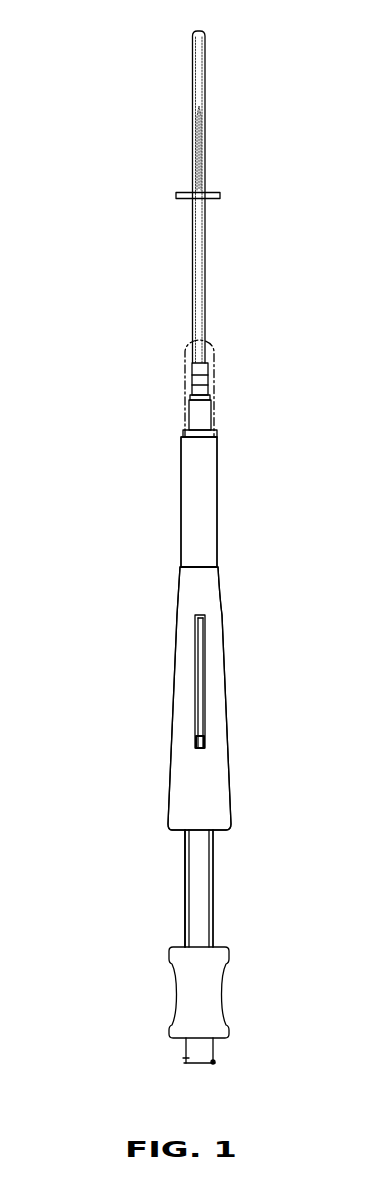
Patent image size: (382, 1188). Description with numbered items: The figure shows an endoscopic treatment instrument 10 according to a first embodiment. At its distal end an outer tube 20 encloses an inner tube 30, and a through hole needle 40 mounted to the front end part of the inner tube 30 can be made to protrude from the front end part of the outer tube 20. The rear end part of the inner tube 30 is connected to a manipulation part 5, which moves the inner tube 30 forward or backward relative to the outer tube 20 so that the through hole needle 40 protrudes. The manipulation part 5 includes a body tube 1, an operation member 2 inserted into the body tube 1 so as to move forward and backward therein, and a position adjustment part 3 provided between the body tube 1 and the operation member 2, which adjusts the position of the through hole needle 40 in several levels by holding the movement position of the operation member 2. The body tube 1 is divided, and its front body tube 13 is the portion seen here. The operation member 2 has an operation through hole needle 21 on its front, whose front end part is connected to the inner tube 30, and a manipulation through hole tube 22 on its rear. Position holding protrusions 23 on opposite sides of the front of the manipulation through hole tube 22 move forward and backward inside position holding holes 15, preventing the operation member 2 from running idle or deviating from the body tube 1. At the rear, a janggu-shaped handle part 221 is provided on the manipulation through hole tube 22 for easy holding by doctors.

The endoscopic treatment instrument 10 is at (301, 593).
The body tube 1 is at (176, 682).
The operation member 2 is at (174, 907).
The position adjustment part 3 is at (162, 770).
The manipulation part 5 is at (94, 665).
The front body tube 13 is at (205, 505).
The position holding holes 15 is at (200, 683).
The outer tube 20 is at (205, 72).
The operation through hole needle 21 is at (205, 306).
The manipulation through hole tube 22 is at (205, 882).
The handle part 221 is at (205, 998).
The position holding protrusions 23 is at (205, 740).
The inner tube 30 is at (205, 205).
The through hole needle 40 is at (205, 133).